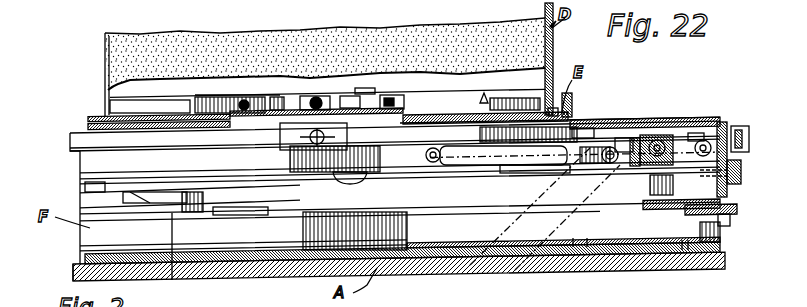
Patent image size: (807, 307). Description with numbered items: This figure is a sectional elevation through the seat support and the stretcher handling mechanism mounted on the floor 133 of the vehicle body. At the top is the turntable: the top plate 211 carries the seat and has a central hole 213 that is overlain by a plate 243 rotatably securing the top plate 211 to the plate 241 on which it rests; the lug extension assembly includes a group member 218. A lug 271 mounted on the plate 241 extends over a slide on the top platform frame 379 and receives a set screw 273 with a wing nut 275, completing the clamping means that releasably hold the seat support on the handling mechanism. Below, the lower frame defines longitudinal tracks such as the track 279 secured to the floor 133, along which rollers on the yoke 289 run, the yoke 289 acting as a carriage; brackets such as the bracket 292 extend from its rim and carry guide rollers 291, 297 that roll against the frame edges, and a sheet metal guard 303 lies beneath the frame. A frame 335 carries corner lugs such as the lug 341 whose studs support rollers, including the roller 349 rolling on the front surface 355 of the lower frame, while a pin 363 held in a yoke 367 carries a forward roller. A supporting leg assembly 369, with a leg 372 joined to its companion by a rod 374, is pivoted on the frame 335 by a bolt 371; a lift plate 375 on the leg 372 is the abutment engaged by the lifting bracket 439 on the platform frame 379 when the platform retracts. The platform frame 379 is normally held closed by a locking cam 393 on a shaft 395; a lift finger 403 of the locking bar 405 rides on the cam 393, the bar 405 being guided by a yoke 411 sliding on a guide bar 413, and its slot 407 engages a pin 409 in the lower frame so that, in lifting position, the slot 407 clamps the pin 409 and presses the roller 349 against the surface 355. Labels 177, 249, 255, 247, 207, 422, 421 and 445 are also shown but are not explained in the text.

The frame 177 is at (108, 53).
The central hole 213 is at (212, 113).
The screw 249 is at (253, 110).
The member 255 is at (287, 110).
The set screw 273 is at (342, 110).
The plate 243 is at (355, 113).
The block 247 is at (408, 113).
The wing nut 275 is at (365, 93).
The stop 207 is at (550, 108).
The group member 218 is at (567, 115).
The supporting leg 372 is at (575, 116).
The bolt 371 is at (603, 138).
The frame 335 is at (620, 135).
The top platform frame 379 is at (635, 137).
The pin 363 is at (693, 133).
The yoke 367 is at (697, 120).
The locking cam 393 is at (700, 127).
The lift finger 403 is at (722, 120).
The shaft 395 is at (727, 128).
The housing 422 is at (747, 133).
The insert 421 is at (748, 140).
The guide bar 413 is at (730, 170).
The yoke 411 is at (730, 170).
The locking bar 405 is at (722, 188).
The front surface 355 is at (733, 207).
The slot 407 is at (733, 215).
The pin 409 is at (727, 230).
The floor 133 is at (722, 247).
The pin 445 is at (688, 250).
The roller 349 is at (682, 250).
The sheet metal guard 303 is at (587, 247).
The longitudinal track 279 is at (573, 247).
The supporting leg assembly 369 is at (387, 303).
The lug 341 is at (627, 170).
The rod 374 is at (347, 176).
The lifting bracket 439 is at (513, 177).
The lift plate 375 is at (500, 167).
The lug 271 is at (300, 148).
The bracket 292 is at (215, 210).
The guide roller 297 is at (178, 265).
The guide roller 291 is at (192, 240).
The yoke 289 is at (83, 207).
The top plate 211 is at (90, 117).
The plate 241 is at (88, 127).